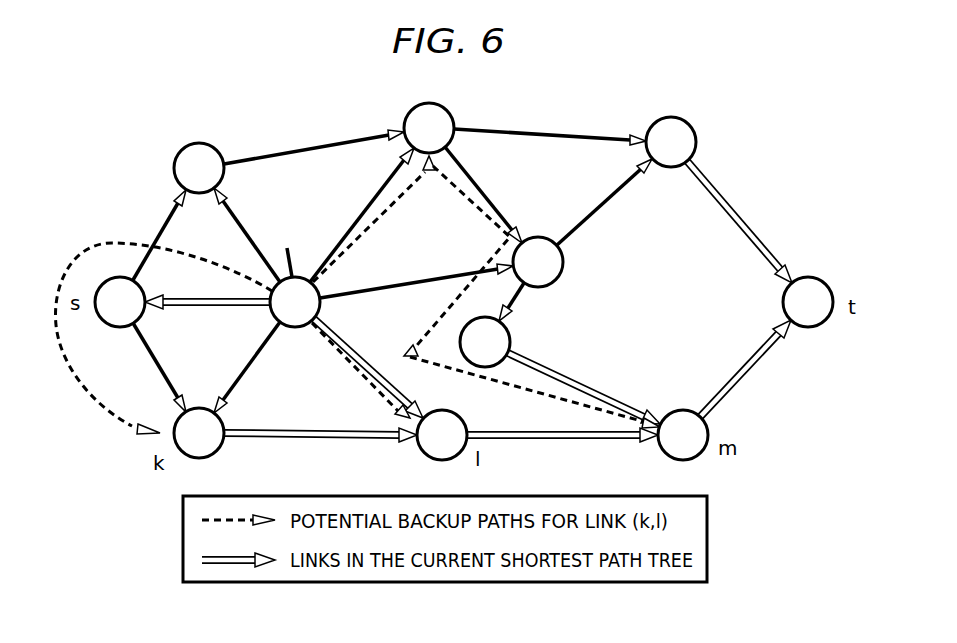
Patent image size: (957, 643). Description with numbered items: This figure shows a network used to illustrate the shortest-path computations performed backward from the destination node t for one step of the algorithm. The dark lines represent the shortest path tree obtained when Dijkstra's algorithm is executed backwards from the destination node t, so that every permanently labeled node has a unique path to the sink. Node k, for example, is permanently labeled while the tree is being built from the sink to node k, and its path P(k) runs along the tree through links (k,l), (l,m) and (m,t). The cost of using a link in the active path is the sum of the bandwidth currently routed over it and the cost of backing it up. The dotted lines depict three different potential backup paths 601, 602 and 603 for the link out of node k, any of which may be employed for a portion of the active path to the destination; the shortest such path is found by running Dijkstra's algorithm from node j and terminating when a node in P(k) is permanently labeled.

The backup path 601 is at (103, 408).
The backup path 602 is at (357, 367).
The backup path 603 is at (478, 205).